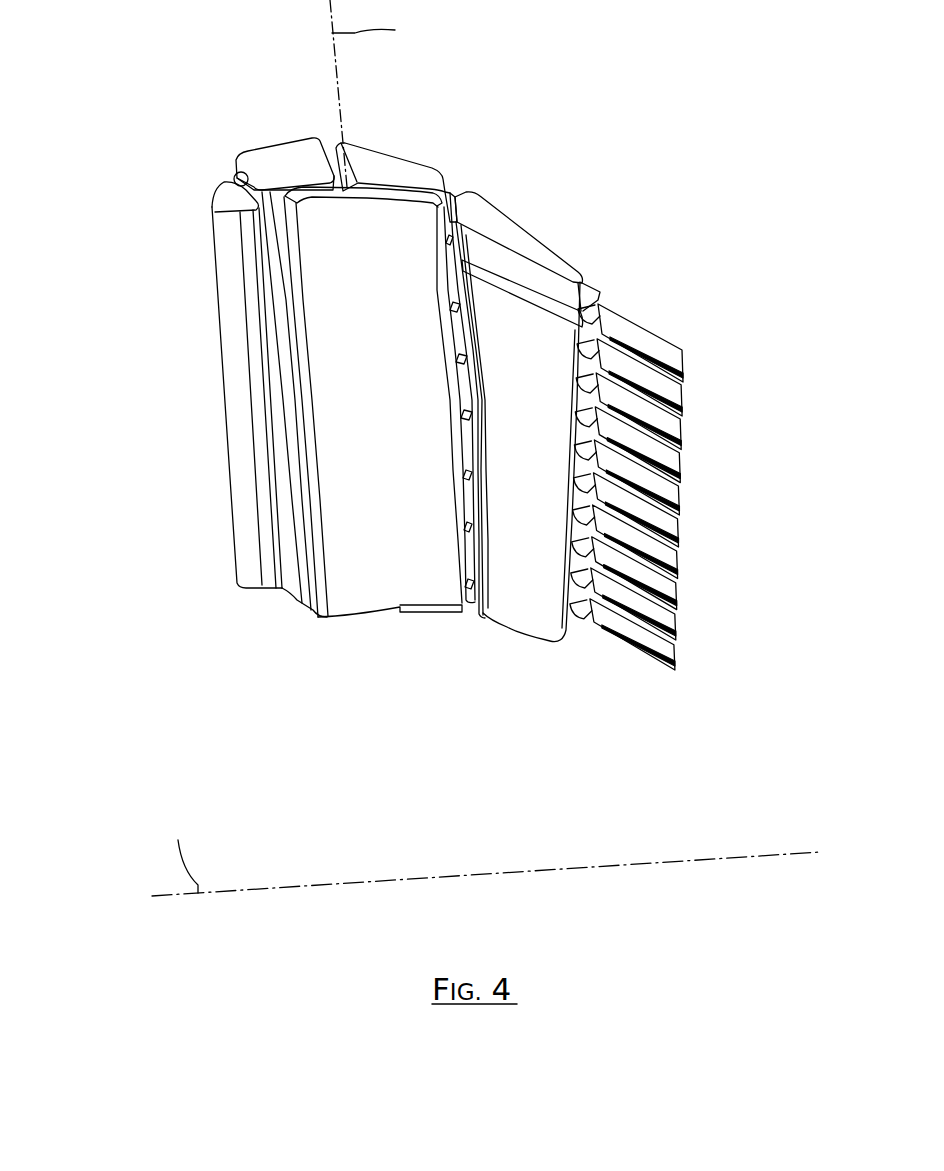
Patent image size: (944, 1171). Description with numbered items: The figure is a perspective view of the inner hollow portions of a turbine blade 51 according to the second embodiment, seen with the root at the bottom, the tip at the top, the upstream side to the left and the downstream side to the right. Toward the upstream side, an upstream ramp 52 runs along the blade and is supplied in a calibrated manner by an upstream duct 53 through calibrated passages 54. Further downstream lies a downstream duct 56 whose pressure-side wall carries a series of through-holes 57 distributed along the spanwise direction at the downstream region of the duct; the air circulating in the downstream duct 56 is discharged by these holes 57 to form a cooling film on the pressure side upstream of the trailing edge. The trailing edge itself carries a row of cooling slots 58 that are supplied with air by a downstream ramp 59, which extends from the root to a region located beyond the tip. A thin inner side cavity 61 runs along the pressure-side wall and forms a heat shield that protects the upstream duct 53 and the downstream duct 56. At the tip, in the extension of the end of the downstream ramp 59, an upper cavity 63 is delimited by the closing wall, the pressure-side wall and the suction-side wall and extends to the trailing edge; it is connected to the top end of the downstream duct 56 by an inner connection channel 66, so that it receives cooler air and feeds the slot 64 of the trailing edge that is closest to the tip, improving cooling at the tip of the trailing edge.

The blade 51 is at (165, 135).
The upstream ramp 52 is at (228, 348).
The upstream duct 53 is at (272, 152).
The calibrated passages 54 is at (232, 180).
The downstream duct 56 is at (421, 172).
The through-holes 57 is at (470, 476).
The cooling slots 58 is at (585, 590).
The downstream ramp 59 is at (518, 432).
The inner side cavity 61 is at (379, 402).
The upper cavity 63 is at (530, 203).
The slot 64 is at (580, 295).
The inner connection channel 66 is at (455, 196).